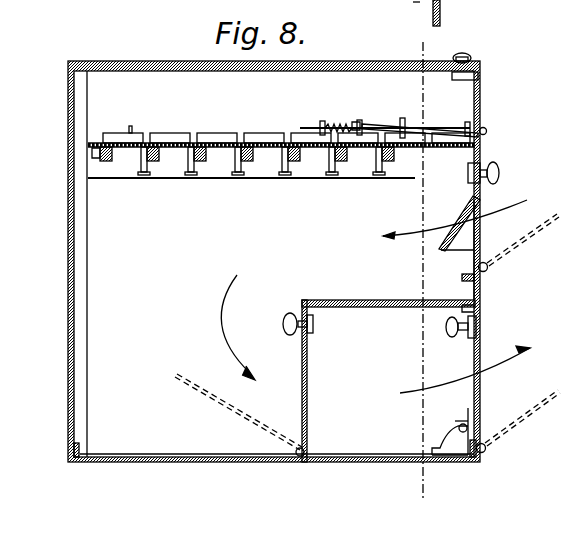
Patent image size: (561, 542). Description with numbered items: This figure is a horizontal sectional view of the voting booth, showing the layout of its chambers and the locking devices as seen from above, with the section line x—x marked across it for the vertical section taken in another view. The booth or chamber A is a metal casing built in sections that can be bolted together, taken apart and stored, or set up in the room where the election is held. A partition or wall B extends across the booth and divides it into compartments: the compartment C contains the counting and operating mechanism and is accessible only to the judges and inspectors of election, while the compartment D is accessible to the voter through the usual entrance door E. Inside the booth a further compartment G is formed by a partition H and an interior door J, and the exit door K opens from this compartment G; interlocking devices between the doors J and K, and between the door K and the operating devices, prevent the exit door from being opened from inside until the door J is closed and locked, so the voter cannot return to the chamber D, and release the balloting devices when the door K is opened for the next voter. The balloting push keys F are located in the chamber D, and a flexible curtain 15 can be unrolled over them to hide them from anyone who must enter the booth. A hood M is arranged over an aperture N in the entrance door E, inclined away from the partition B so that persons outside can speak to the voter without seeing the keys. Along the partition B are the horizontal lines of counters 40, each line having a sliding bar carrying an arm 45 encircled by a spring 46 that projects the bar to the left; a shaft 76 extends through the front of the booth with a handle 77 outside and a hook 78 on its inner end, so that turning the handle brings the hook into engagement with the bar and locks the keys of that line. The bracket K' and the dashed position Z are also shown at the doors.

The booth or chamber A is at (274, 257).
The partition or wall B is at (167, 140).
The compartment C is at (281, 119).
The compartment D is at (238, 303).
The entrance door E is at (494, 187).
The push keys F is at (141, 165).
The compartment G is at (391, 381).
The partition H is at (358, 304).
The interior door J is at (302, 352).
The exit door K is at (465, 369).
The bracket catch K' is at (450, 431).
The hood M is at (459, 223).
The aperture N is at (478, 250).
The door open position (dashed) Z is at (367, 330).
The section line x- x is at (420, 271).
The flexible curtain 15 is at (376, 126).
The counters 40 is at (266, 139).
The arm 45 is at (316, 120).
The spring 46 is at (342, 118).
The shaft 76 is at (436, 128).
The handle 77 is at (488, 129).
The hook 78 is at (356, 127).